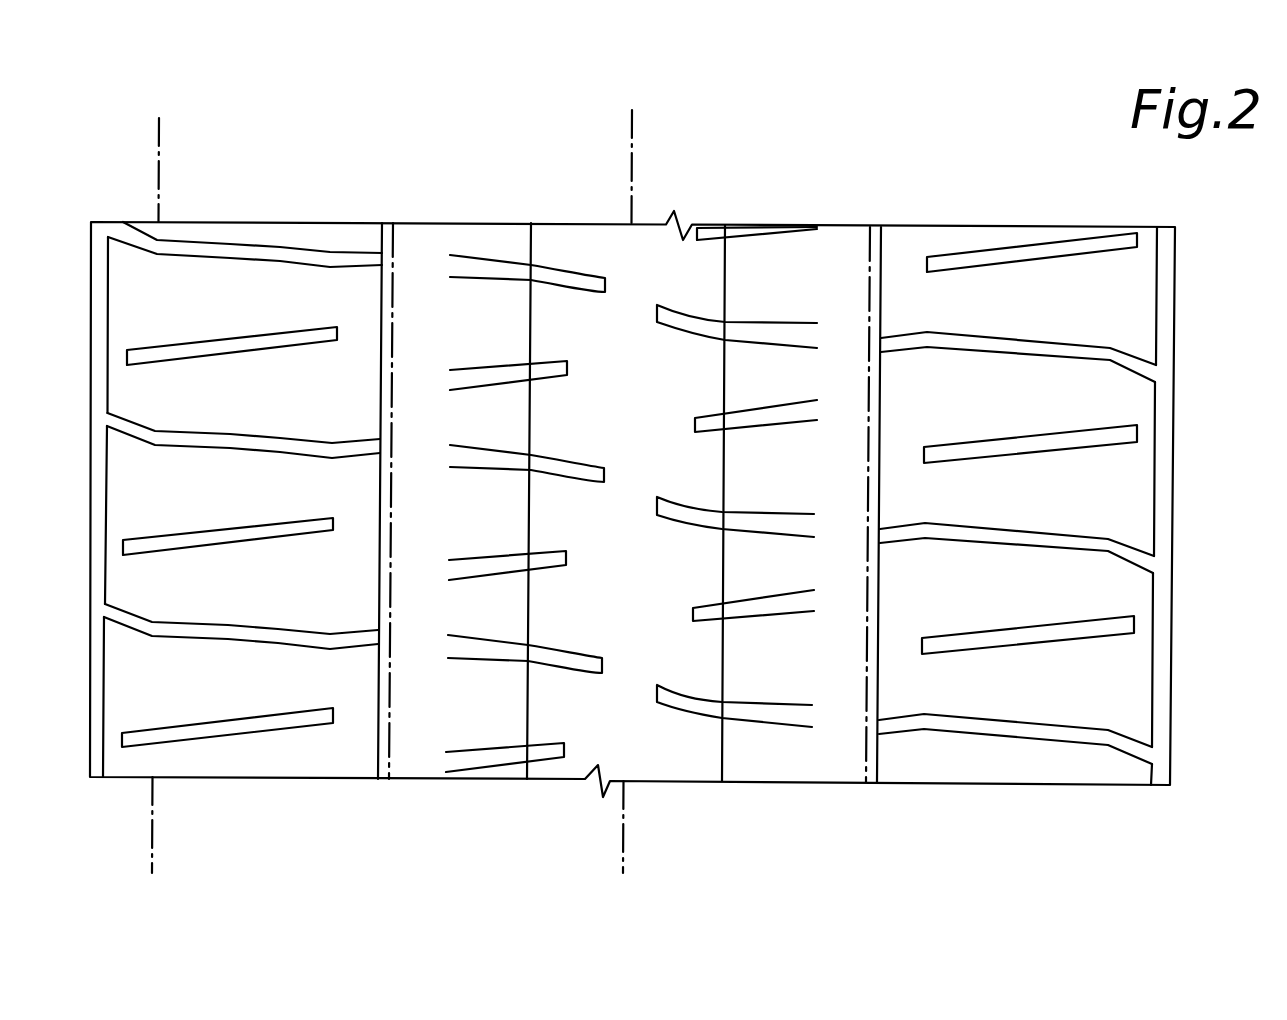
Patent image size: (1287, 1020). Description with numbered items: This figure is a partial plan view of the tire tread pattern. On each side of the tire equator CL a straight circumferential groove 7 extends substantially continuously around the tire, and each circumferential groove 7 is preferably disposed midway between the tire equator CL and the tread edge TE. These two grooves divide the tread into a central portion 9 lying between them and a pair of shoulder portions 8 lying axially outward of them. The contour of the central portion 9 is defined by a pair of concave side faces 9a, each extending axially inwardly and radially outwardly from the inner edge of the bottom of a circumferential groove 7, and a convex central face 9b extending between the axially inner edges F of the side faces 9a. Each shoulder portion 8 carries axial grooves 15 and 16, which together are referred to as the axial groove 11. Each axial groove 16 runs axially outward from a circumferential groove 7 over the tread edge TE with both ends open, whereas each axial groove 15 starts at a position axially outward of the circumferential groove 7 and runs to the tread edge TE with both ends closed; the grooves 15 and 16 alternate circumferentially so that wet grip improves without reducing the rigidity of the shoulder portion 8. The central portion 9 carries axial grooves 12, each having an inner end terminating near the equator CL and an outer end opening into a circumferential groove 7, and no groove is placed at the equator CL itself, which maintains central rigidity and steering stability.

The circumferential groove 7 is at (412, 260).
The shoulder portion 8 is at (254, 215).
The central portion 9 is at (578, 212).
The concave side face 9a is at (499, 223).
The convex central face 9b is at (600, 221).
The axial groove 11 is at (620, 586).
The axial groove 12 is at (520, 760).
The axial groove 15 is at (235, 737).
The axial groove 16 is at (357, 647).
The axially inner edge of side face F is at (528, 258).
The tread edge TE is at (157, 153).
The tire equator CL is at (632, 195).